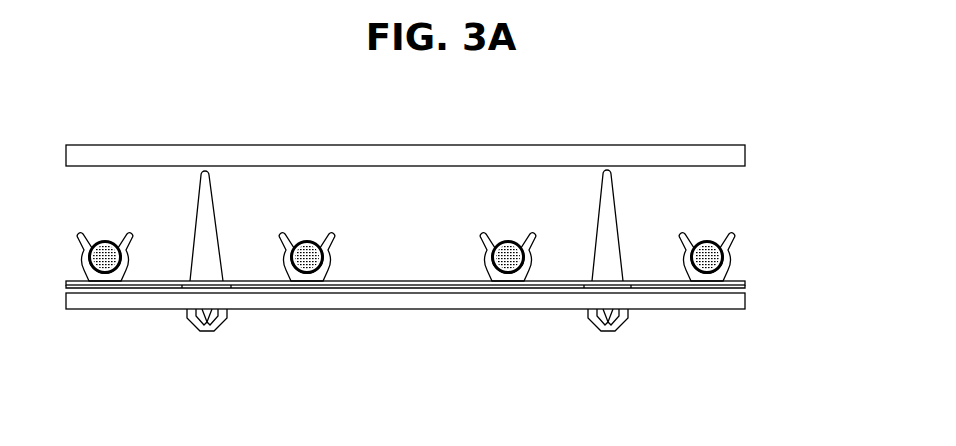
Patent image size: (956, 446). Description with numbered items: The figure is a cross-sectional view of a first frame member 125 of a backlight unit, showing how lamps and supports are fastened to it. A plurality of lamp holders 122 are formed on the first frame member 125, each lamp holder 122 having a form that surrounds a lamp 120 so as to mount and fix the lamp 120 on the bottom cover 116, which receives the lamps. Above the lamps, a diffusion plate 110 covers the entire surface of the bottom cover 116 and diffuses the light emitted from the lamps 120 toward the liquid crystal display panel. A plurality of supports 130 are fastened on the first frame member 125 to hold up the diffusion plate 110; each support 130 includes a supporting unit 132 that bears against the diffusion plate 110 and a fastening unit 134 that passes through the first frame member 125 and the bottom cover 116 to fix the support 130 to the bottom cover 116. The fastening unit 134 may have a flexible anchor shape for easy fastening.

The diffusion plate 110 is at (745, 151).
The bottom cover 116 is at (745, 301).
The lamp 120 is at (707, 262).
The lamp holder 122 is at (733, 247).
The first frame member 125 is at (745, 283).
The support 130 is at (582, 298).
The supporting unit 132 is at (598, 252).
The fastening unit 134 is at (610, 329).